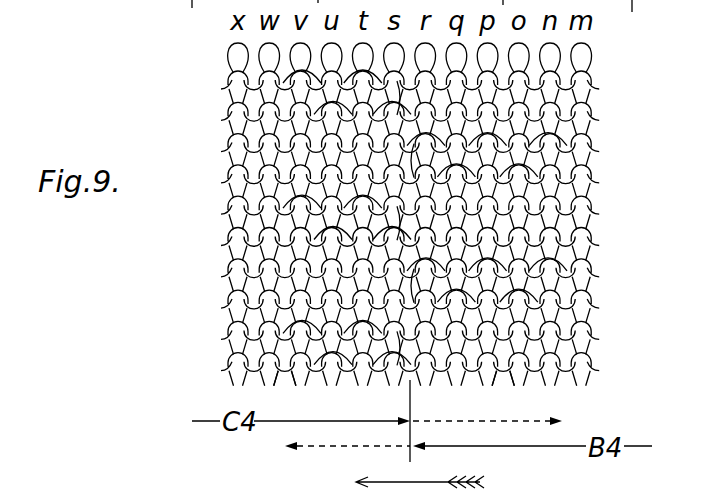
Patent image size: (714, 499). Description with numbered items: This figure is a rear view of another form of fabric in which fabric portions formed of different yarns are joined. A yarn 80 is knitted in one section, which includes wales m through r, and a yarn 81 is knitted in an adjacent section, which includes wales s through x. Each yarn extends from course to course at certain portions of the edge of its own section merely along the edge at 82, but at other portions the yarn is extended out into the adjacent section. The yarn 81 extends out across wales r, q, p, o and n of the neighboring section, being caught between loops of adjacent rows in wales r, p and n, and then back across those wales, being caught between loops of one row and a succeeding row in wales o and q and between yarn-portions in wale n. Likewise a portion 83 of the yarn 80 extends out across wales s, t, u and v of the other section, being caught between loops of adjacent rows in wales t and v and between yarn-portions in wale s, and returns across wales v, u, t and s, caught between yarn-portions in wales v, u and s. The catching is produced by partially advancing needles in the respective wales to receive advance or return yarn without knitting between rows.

The yarn 80 is at (508, 384).
The yarn 81 is at (287, 384).
The edge 82 is at (406, 227).
The portion of the yarn 83 is at (292, 227).